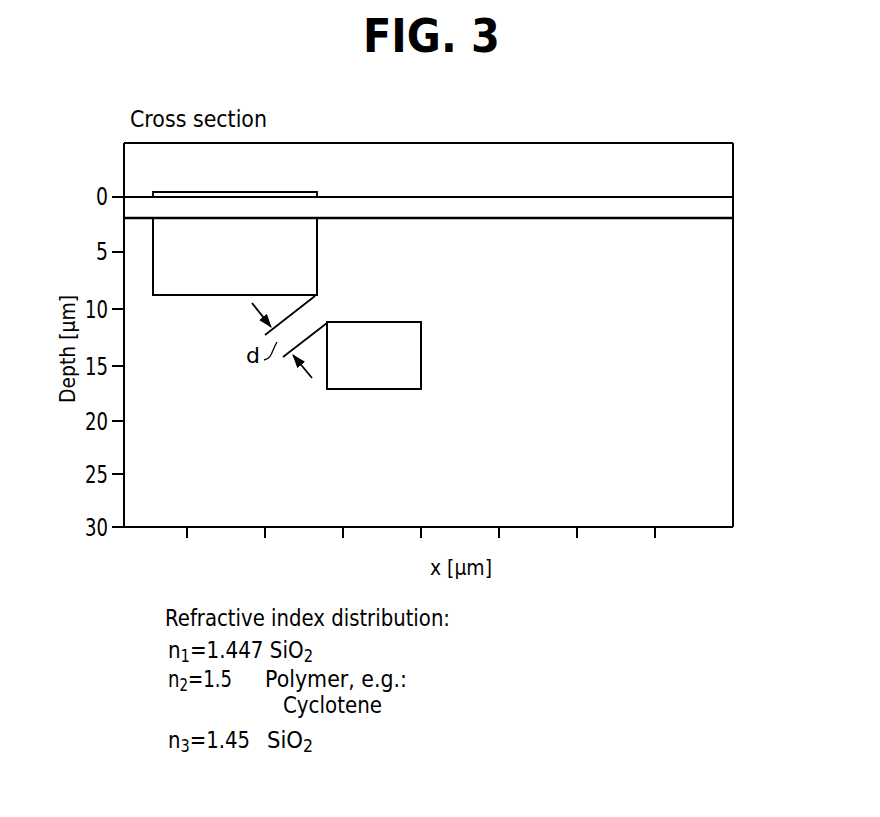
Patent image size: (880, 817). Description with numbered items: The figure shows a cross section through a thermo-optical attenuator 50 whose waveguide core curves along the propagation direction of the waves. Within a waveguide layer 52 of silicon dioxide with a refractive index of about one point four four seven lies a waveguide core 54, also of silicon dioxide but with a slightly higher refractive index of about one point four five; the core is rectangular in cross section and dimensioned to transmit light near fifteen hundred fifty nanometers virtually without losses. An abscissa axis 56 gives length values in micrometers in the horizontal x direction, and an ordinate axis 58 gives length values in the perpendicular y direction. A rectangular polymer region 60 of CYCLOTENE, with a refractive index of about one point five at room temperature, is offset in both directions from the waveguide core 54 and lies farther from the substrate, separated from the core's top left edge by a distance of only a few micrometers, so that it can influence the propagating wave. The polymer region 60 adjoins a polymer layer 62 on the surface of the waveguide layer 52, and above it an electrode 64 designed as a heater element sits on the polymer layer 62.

The thermo-optical attenuator 50 is at (672, 109).
The waveguide layer 52 is at (630, 401).
The waveguide core 54 is at (421, 351).
The abscissa axis 56 is at (702, 528).
The ordinate axis 58 is at (124, 162).
The polymer region 60 is at (317, 252).
The polymer layer 62 is at (508, 204).
The electrode 64 is at (248, 193).